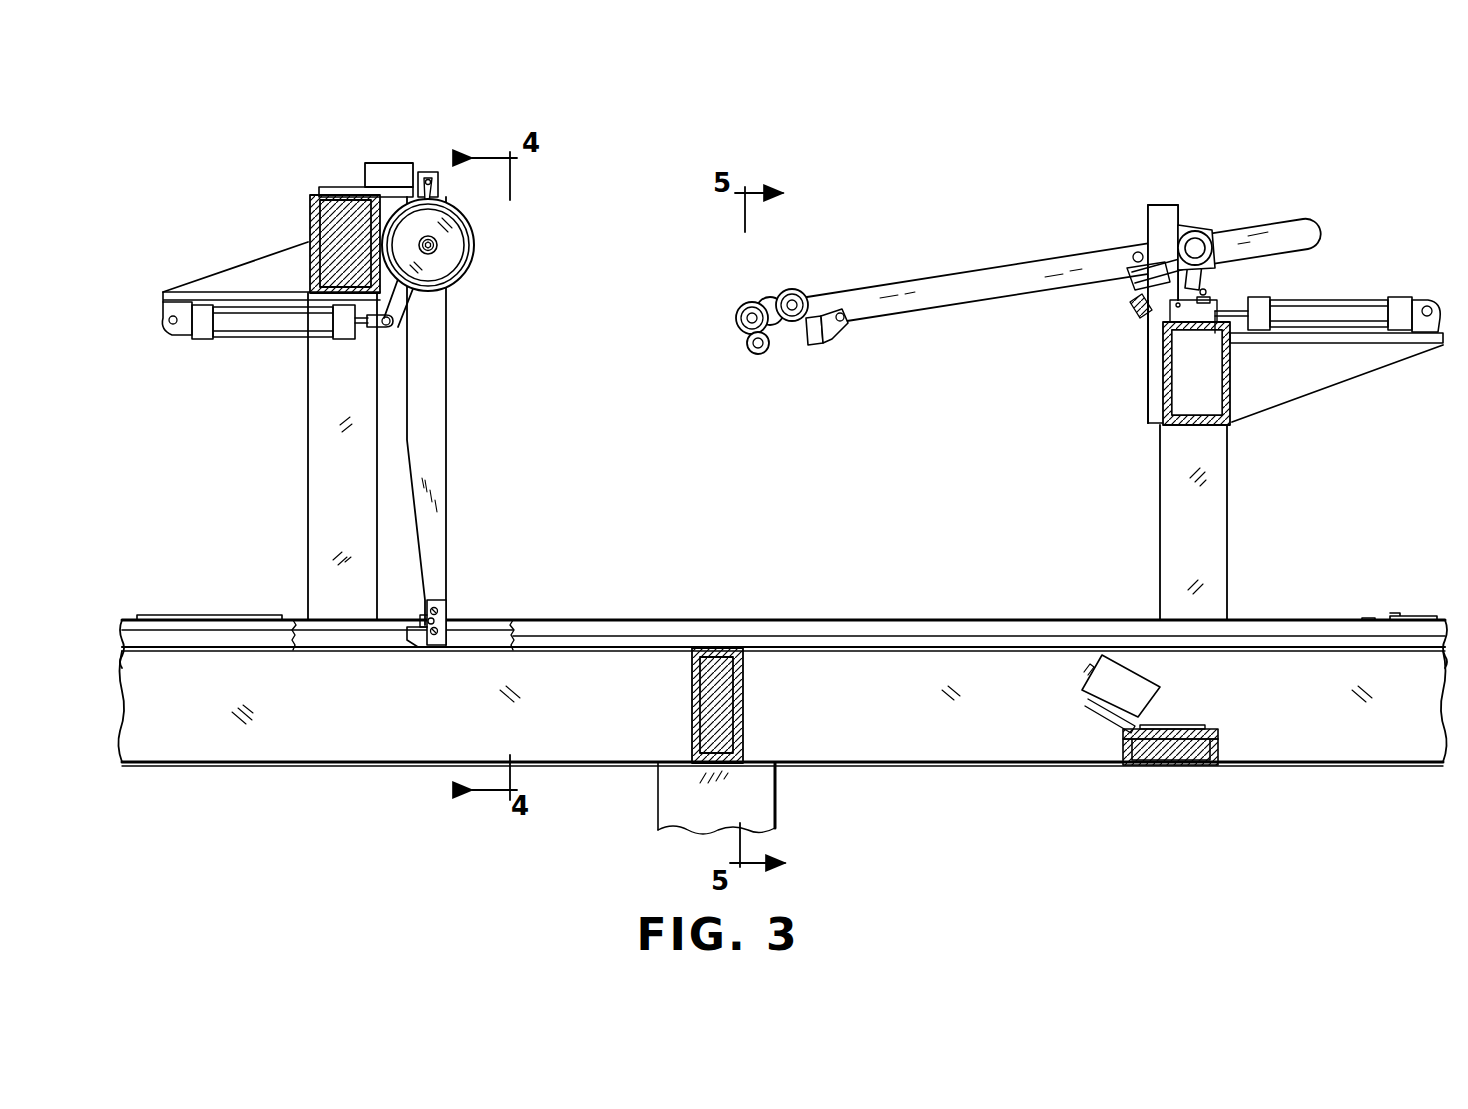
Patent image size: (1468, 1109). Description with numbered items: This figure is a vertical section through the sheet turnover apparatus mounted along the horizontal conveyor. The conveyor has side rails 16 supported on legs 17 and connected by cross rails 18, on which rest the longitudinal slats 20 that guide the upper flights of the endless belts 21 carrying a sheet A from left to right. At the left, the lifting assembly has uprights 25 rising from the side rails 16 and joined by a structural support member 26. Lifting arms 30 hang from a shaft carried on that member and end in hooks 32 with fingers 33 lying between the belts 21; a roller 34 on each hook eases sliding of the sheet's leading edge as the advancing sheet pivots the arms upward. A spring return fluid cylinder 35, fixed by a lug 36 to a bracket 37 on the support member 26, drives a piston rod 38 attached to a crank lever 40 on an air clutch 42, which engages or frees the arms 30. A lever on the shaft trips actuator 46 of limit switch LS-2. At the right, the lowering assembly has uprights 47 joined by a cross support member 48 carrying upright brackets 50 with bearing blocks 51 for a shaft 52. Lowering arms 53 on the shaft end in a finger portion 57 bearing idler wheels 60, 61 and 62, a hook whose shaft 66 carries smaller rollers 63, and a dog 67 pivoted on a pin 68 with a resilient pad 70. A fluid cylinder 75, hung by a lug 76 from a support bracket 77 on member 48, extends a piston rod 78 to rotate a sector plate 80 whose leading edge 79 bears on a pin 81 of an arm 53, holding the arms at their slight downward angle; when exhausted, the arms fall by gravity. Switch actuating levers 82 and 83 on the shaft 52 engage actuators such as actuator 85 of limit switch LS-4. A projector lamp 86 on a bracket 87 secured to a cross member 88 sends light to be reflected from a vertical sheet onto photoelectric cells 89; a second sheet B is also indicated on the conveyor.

The side rails 16 is at (936, 752).
The legs 17 is at (660, 786).
The cross rails 18 is at (692, 684).
The slats 20 is at (831, 648).
The endless belts 21 is at (780, 621).
The uprights 25 is at (318, 440).
The structural support member 26 is at (312, 215).
The lifting arms 30 is at (438, 441).
The hooks 32 is at (446, 620).
The fingers 33 is at (415, 637).
The roller 34 is at (424, 620).
The fluid cylinder 35 is at (234, 338).
The lug 36 is at (168, 318).
The bracket 37 is at (228, 275).
The piston rod 38 is at (368, 325).
The crank lever 40 is at (406, 295).
The air clutch 42 is at (467, 250).
The actuator 46 is at (432, 191).
The uprights 47 is at (1222, 485).
The cross support member 48 is at (1180, 430).
The brackets 50 is at (1156, 208).
The bearing blocks 51 is at (1195, 230).
The shaft 52 is at (1196, 247).
The lowering arms 53 is at (983, 265).
The finger portion 57 is at (822, 300).
The idler wheel 60 is at (796, 292).
The idler wheel 61 is at (738, 318).
The idler wheel 62 is at (769, 298).
The rollers 63 is at (750, 350).
The shaft 66 is at (758, 355).
The dog 67 is at (830, 340).
The pin 68 is at (844, 321).
The pad 70 is at (810, 333).
The fluid cylinder 75 is at (1330, 300).
The lug 76 is at (1430, 304).
The support bracket 77 is at (1375, 345).
The piston rod 78 is at (1235, 331).
The leading edge 79 is at (1130, 265).
The sector plate 80 is at (1160, 272).
The pin 81 is at (1137, 252).
The switch actuating lever 82 is at (1192, 284).
The switch actuating lever 83 is at (1132, 305).
The actuator 85 is at (1200, 324).
The projector lamp 86 is at (1095, 688).
The bracket 87 is at (1182, 727).
The cross member 88 is at (1215, 745).
The photoelectric cells 89 is at (1162, 312).
The sheet A is at (165, 613).
The plate B is at (1370, 617).
The limit switch LS-2 is at (375, 170).
The limit switch LS-4 is at (1168, 320).